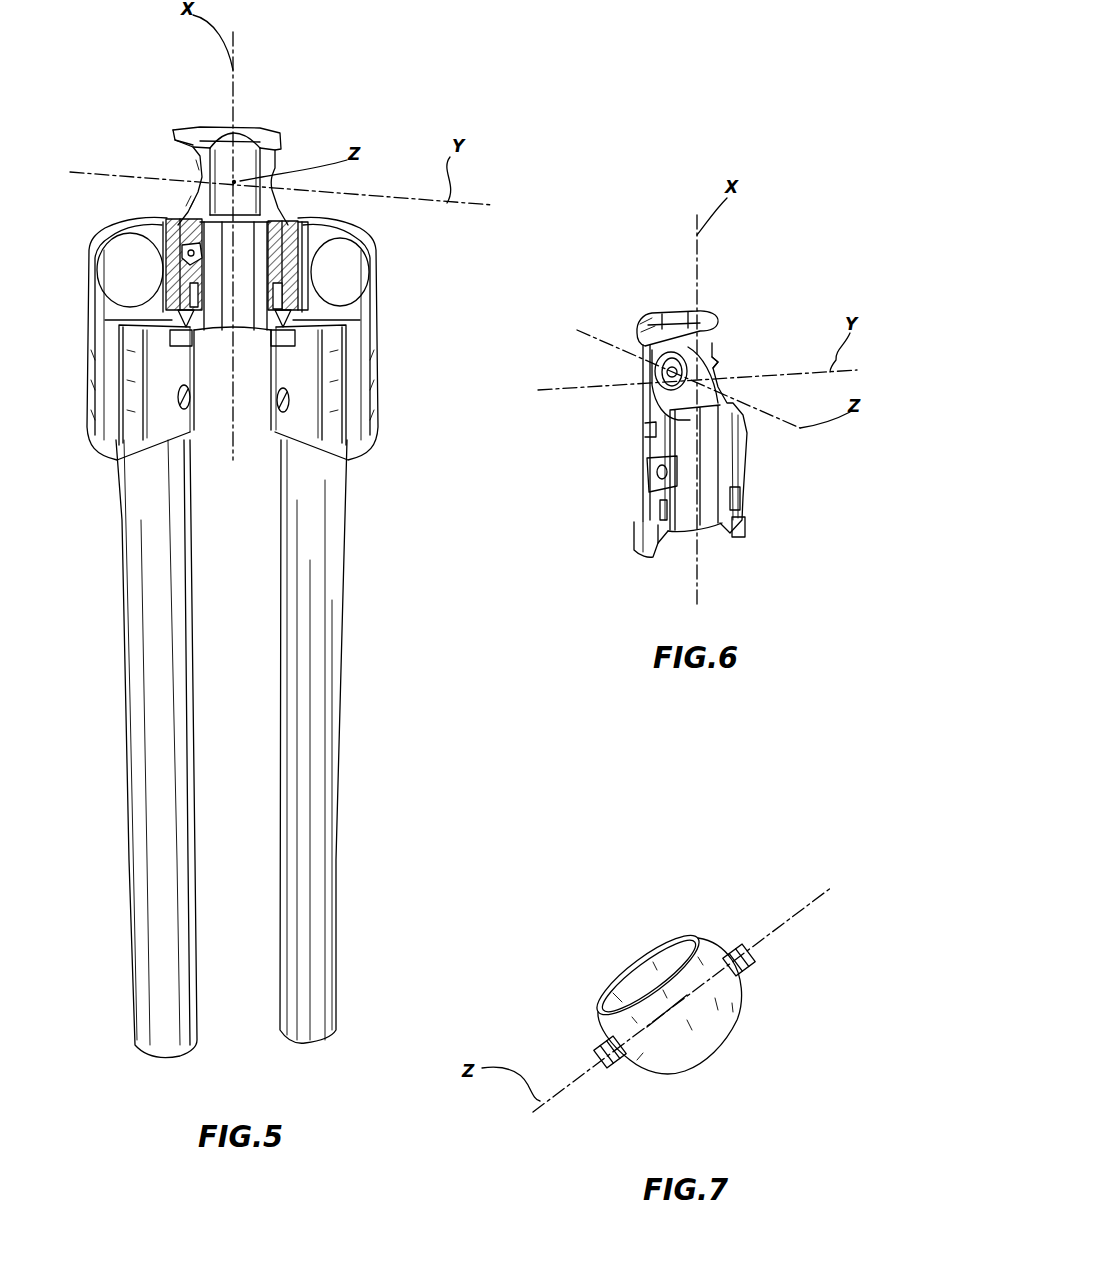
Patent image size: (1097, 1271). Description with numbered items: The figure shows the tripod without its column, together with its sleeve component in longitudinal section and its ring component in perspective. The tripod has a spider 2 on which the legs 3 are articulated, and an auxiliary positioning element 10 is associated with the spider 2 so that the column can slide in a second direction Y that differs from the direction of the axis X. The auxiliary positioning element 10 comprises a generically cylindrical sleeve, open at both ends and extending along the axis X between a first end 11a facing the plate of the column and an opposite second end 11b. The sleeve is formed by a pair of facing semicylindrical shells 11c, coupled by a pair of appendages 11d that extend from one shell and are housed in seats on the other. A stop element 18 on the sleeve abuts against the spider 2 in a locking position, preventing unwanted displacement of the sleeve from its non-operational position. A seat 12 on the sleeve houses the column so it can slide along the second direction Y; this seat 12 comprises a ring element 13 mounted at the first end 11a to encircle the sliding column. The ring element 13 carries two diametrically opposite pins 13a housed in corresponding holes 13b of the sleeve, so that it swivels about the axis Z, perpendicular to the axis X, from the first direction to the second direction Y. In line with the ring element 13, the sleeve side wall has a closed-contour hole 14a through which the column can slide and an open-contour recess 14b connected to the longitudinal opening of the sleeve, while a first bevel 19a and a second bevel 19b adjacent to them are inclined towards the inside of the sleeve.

In FIG. 5, the spider 2 is at (267, 222).
In FIG. 5, the legs 3 is at (150, 607).
In FIG. 5, the auxiliary positioning element 10 is at (282, 152).
In FIG. 5, the first end 11a is at (183, 130).
In FIG. 6, the first end 11a is at (650, 320).
In FIG. 6, the second end 11b is at (725, 535).
In FIG. 6, the semicylindrical shells 11c is at (616, 518).
In FIG. 6, the appendages 11d is at (637, 547).
In FIG. 5, the seat 12 is at (176, 163).
In FIG. 5, the ring element 13 is at (233, 160).
In FIG. 7, the ring element 13 is at (591, 986).
In FIG. 7, the pins 13a is at (730, 950).
In FIG. 6, the holes 13b is at (640, 370).
In FIG. 6, the hole 14a is at (650, 407).
In FIG. 6, the recess 14b is at (713, 378).
In FIG. 5, the stop element 18 is at (174, 224).
In FIG. 6, the stop element 18 is at (643, 480).
In FIG. 6, the first bevel 19a is at (650, 435).
In FIG. 6, the second bevel 19b is at (745, 447).